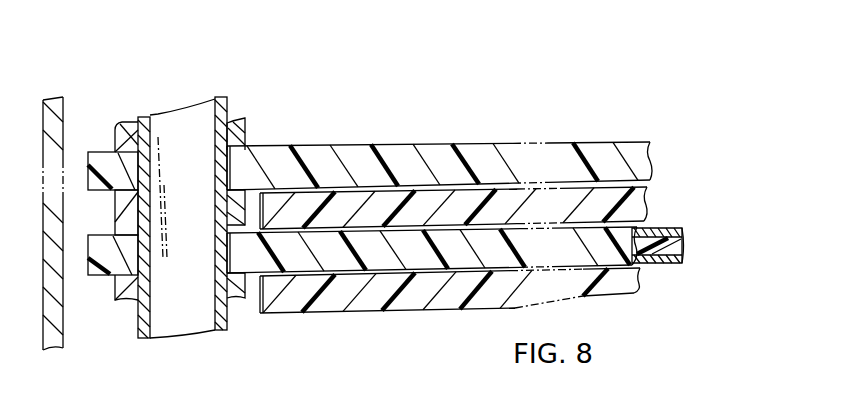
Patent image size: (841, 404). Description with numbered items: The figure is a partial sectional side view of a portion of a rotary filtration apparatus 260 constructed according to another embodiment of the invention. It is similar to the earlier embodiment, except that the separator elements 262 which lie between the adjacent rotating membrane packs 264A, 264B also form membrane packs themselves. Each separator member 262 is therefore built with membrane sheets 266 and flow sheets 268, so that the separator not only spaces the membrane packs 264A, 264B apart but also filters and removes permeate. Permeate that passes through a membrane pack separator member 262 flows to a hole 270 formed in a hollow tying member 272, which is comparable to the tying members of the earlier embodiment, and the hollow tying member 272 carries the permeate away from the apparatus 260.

The rotary filtration apparatus 260 is at (308, 105).
The separator element 262 is at (452, 234).
The rotating membrane pack 264A is at (384, 200).
The rotating membrane pack 264B is at (350, 306).
The membrane sheet 266 is at (656, 228).
The flow sheet 268 is at (682, 233).
The hole 270 is at (218, 255).
The hollow tying member 272 is at (220, 98).